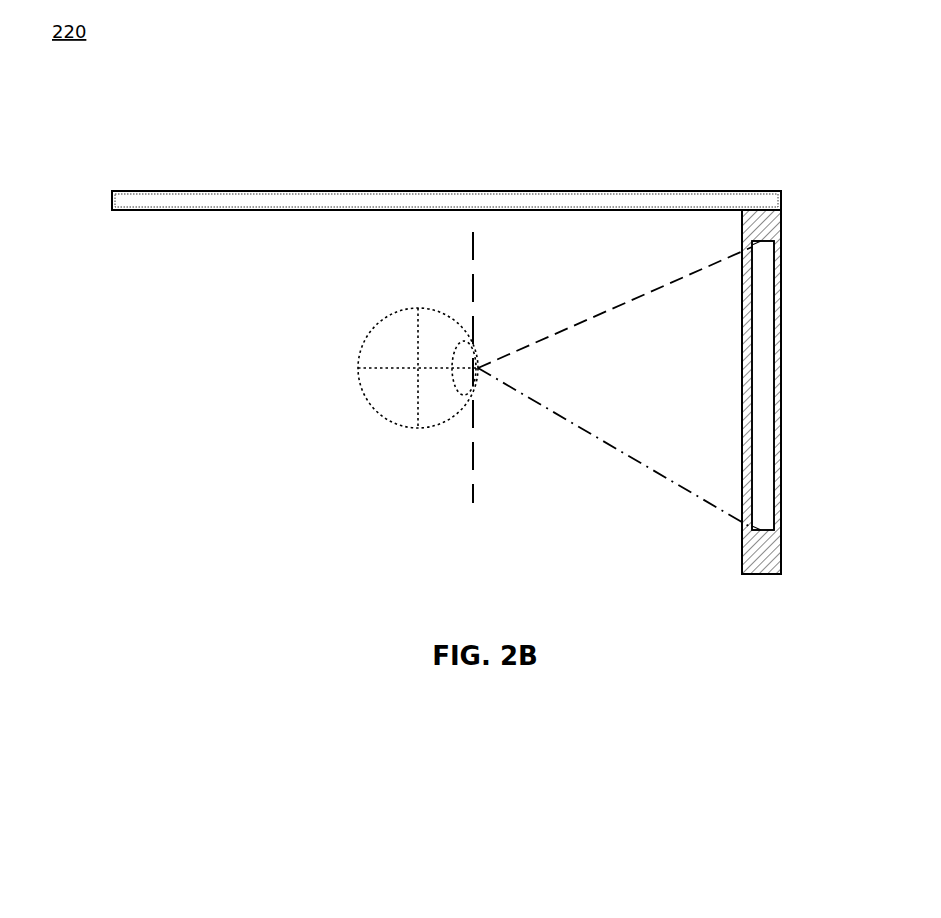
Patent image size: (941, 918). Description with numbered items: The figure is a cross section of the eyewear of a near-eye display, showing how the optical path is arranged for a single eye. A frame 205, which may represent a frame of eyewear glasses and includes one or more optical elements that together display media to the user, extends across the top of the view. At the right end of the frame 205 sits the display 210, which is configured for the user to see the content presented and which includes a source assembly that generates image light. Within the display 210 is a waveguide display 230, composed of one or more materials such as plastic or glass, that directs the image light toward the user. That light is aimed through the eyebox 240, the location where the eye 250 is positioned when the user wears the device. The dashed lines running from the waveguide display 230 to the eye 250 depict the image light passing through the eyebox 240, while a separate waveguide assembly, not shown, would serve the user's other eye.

The frame 205 is at (668, 191).
The display 210 is at (781, 495).
The waveguide display 230 is at (758, 300).
The eyebox 240 is at (470, 470).
The eye 250 is at (380, 318).